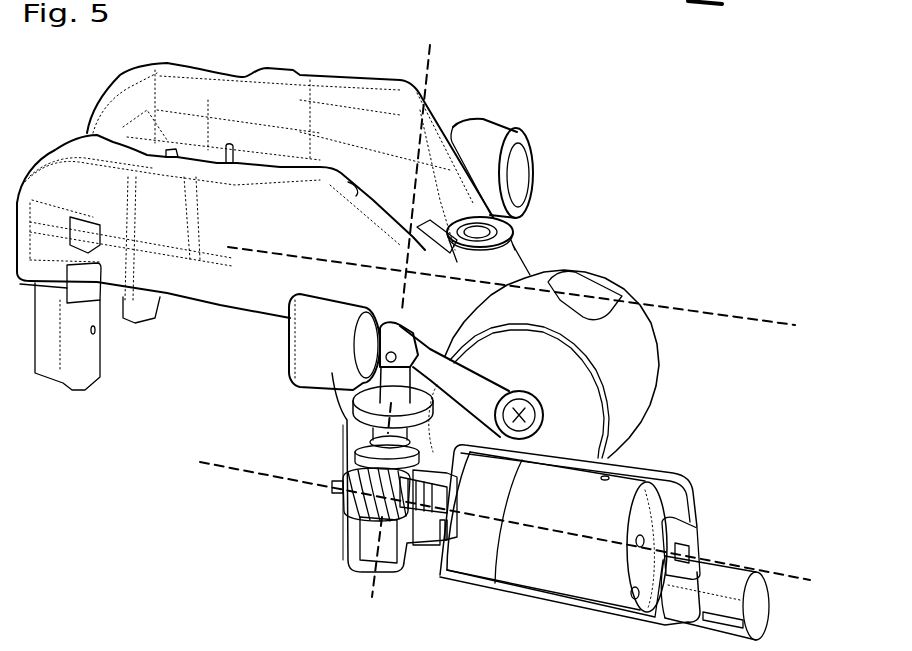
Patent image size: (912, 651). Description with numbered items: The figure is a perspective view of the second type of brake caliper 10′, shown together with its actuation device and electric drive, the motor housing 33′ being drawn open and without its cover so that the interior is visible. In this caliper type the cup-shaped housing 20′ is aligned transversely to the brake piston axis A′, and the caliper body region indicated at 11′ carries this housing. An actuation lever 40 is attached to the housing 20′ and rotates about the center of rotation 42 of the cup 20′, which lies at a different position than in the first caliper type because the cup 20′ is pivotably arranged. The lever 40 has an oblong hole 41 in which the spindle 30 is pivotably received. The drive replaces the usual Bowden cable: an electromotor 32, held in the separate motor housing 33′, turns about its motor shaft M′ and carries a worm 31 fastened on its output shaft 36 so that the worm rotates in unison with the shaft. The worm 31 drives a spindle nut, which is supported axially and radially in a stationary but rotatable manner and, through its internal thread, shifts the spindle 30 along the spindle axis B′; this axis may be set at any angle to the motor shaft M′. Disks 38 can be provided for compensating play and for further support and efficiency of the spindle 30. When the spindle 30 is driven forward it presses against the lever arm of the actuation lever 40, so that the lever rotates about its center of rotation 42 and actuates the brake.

The brake caliper 10′ is at (630, 178).
The brake caliper housing 11′ is at (595, 250).
The brake piston axis A′ is at (529, 300).
The housing 20′ is at (578, 432).
The spindle 30 is at (373, 527).
The worm 31 is at (360, 503).
The electromotor 32 is at (617, 515).
The motor housing 33′ is at (687, 502).
The output shaft 36 is at (430, 503).
The disks 38 is at (363, 408).
The actuation lever 40 is at (483, 385).
The oblong hole 41 is at (393, 360).
The center of rotation 42 is at (519, 415).
The spindle axis B′ is at (396, 334).
The motor shaft M′ is at (518, 551).